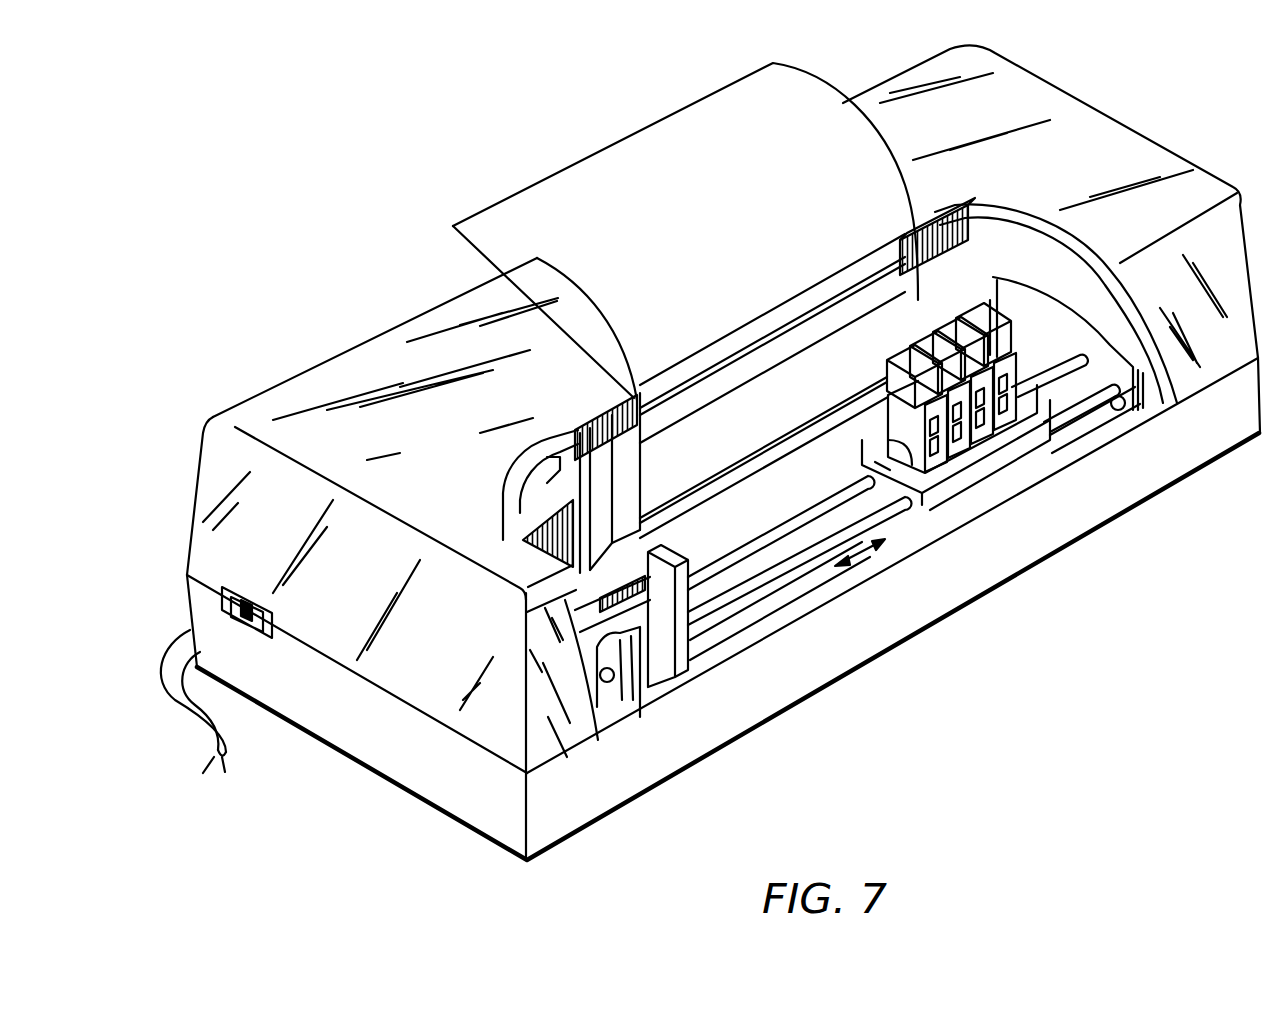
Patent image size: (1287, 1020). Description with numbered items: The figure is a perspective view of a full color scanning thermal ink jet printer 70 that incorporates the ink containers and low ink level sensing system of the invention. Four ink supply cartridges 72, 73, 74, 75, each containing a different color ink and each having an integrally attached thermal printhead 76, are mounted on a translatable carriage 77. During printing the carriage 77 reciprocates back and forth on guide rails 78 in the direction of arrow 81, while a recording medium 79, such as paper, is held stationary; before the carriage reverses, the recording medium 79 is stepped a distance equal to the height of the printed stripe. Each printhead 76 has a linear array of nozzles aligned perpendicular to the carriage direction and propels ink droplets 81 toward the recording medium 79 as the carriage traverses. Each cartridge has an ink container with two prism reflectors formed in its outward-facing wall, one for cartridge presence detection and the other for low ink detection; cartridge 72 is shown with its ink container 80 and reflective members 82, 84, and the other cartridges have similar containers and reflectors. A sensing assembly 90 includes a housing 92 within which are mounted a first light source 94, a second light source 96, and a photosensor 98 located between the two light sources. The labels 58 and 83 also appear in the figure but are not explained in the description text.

The printer housing cover 58 is at (1145, 130).
The thermal ink jet printer 70 is at (383, 298).
The ink supply cartridge 72 is at (937, 468).
The ink supply cartridge 73 is at (964, 455).
The ink supply cartridge 74 is at (990, 438).
The ink supply cartridge 75 is at (1010, 428).
The thermal printhead 76 is at (860, 378).
The translatable carriage 77 is at (917, 345).
The guide rails 78 is at (812, 560).
The recording medium 79 is at (540, 207).
The ink container 80 is at (903, 433).
The arrow 81 is at (885, 572).
The reflective member 82 is at (862, 485).
The encoder strip 83 is at (878, 357).
The reflective member 84 is at (875, 462).
The sensing assembly 90 is at (683, 655).
The housing 92 is at (685, 575).
The first light source 94 is at (633, 712).
The second light source 96 is at (637, 508).
The photosensor 98 is at (505, 495).